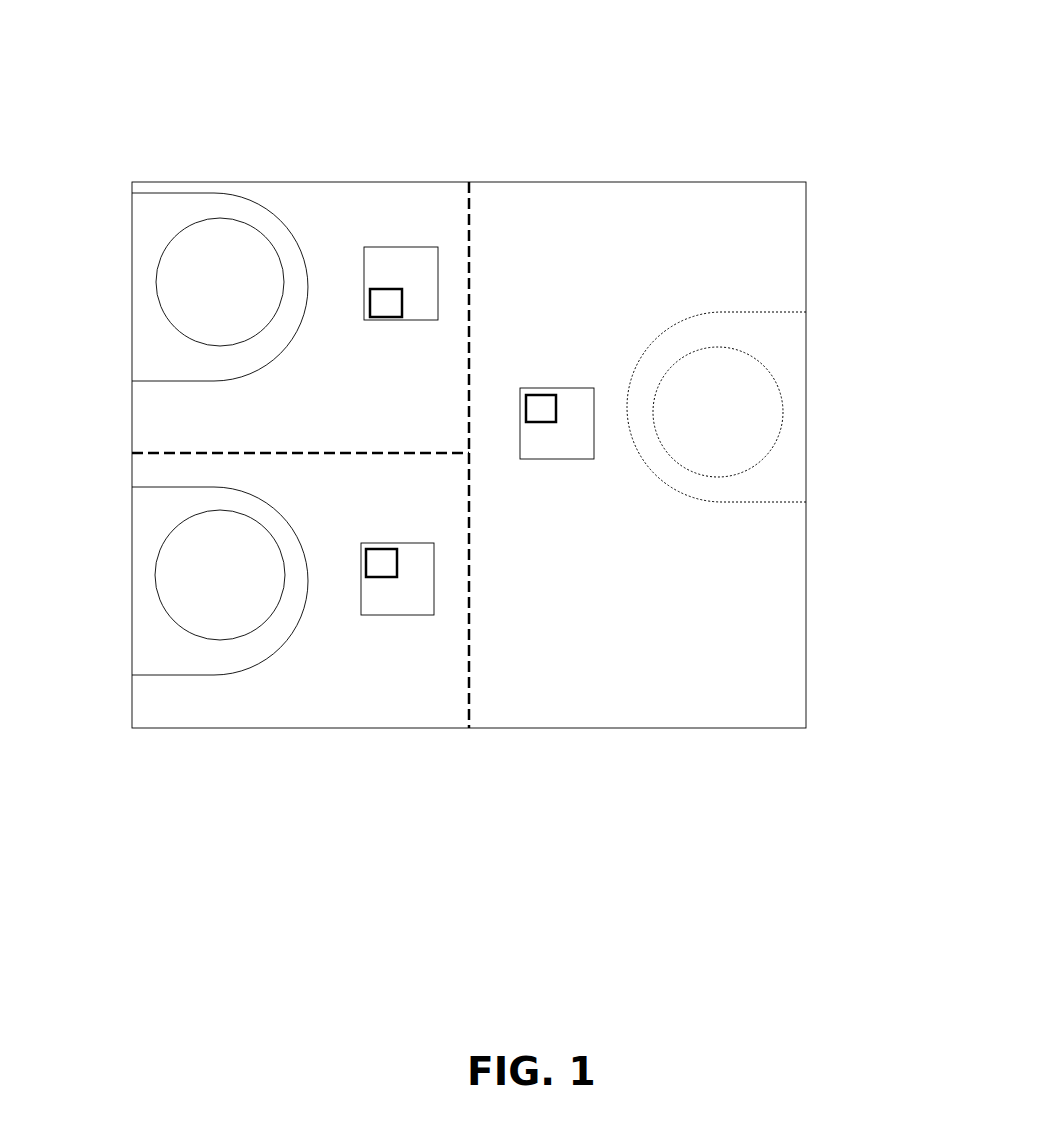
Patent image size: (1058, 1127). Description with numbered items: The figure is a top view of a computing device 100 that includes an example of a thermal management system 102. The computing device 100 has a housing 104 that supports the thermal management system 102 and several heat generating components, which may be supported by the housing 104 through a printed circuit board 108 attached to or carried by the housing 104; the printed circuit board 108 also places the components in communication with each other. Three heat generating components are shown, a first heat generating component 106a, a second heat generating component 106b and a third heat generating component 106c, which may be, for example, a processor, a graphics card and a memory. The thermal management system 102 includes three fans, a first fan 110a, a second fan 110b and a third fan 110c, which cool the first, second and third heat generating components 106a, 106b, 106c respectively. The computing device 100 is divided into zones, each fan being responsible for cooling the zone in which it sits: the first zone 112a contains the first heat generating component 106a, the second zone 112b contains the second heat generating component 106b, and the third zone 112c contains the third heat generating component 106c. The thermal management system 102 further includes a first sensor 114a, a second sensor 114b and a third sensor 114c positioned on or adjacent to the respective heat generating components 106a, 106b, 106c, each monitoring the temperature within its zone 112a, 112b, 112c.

The computing device 100 is at (112, 170).
The thermal management system 102 is at (831, 473).
The housing 104 is at (278, 733).
The first heat generating component 106a is at (412, 272).
The second heat generating component 106b is at (423, 600).
The third heat generating component 106c is at (581, 388).
The printed circuit board 108 is at (760, 650).
The first fan 110a is at (162, 194).
The second fan 110b is at (196, 673).
The third fan 110c is at (785, 312).
The first zone 112a is at (126, 406).
The second zone 112b is at (116, 698).
The third zone 112c is at (548, 158).
The first sensor 114a is at (385, 300).
The second sensor 114b is at (382, 562).
The third sensor 114c is at (540, 408).